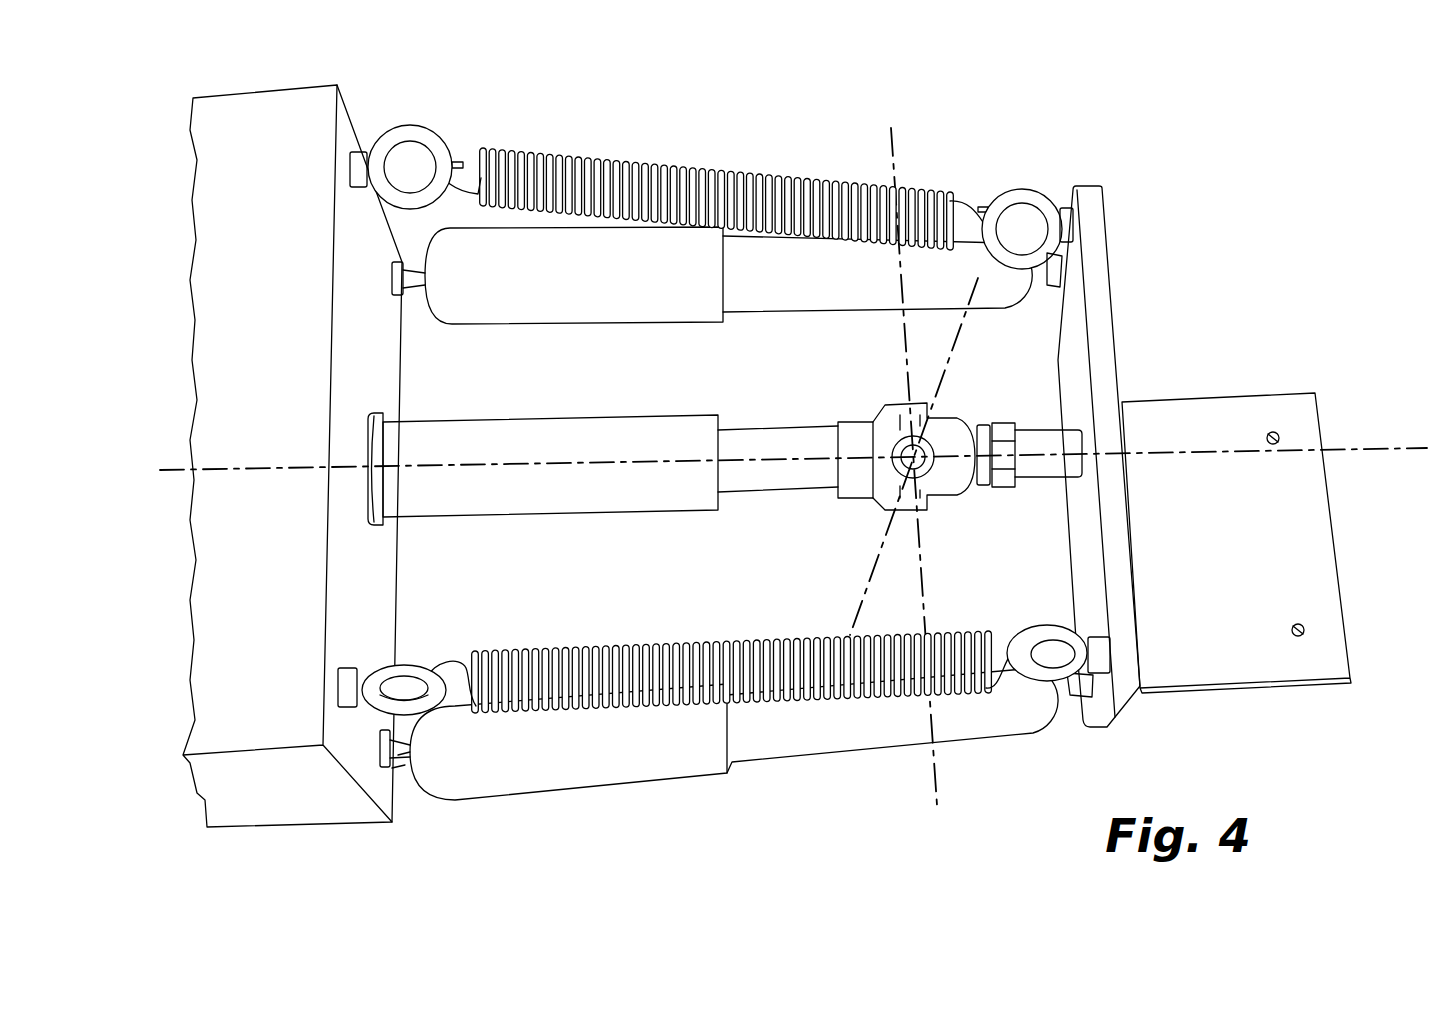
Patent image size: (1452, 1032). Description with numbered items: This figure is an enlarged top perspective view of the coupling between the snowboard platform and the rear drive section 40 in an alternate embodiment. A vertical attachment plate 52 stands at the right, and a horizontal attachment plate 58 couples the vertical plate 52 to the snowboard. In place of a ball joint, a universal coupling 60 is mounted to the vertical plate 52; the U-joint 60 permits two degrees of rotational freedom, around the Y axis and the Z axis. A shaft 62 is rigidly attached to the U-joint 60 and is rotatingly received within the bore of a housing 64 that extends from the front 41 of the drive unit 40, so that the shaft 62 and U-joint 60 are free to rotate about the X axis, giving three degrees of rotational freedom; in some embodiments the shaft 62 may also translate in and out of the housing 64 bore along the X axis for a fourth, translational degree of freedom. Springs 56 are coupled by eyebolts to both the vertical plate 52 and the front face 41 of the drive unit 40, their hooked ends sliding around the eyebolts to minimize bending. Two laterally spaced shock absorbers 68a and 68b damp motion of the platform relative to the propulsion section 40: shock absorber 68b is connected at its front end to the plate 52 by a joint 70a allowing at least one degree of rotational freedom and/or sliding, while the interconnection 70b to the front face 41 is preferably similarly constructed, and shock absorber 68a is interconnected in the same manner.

The rear drive section 40 is at (256, 647).
The front 41 is at (368, 343).
The vertical attachment plate 52 is at (1110, 253).
The springs 56 is at (678, 172).
The horizontal attachment plate 58 is at (1230, 428).
The universal coupling 60 is at (900, 400).
The shaft 62 is at (743, 430).
The housing 64 is at (563, 478).
The shock absorber 68a is at (571, 295).
The shock absorber 68b is at (635, 732).
The joint 70a is at (1097, 708).
The interconnection 70b is at (405, 762).
The X axis X is at (1400, 448).
The Y axis Y is at (895, 152).
The Z axis Z is at (950, 366).